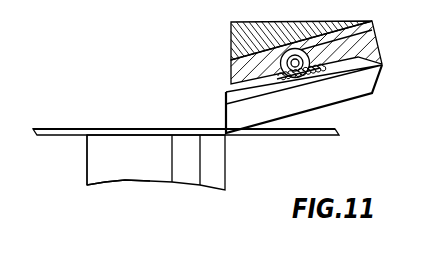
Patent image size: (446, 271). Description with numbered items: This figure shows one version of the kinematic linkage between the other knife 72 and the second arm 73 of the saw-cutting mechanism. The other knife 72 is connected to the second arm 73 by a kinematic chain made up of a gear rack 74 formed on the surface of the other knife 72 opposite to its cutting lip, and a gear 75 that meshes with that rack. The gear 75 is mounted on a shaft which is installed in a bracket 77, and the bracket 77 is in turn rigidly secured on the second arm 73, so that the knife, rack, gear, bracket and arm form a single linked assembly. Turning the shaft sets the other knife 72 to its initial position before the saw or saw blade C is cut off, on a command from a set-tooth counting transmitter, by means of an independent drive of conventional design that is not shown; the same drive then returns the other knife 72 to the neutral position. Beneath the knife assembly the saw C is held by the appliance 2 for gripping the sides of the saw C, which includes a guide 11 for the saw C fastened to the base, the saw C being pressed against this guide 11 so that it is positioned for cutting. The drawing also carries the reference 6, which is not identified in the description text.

The second arm 73 is at (231, 38).
The gear rack 74 is at (231, 85).
The bracket 77 is at (352, 36).
The gear 75 is at (318, 72).
The other knife 72 is at (232, 114).
The saw C is at (74, 128).
The base 6 is at (215, 166).
The guide 11 is at (98, 154).
The appliance 2 is at (125, 181).